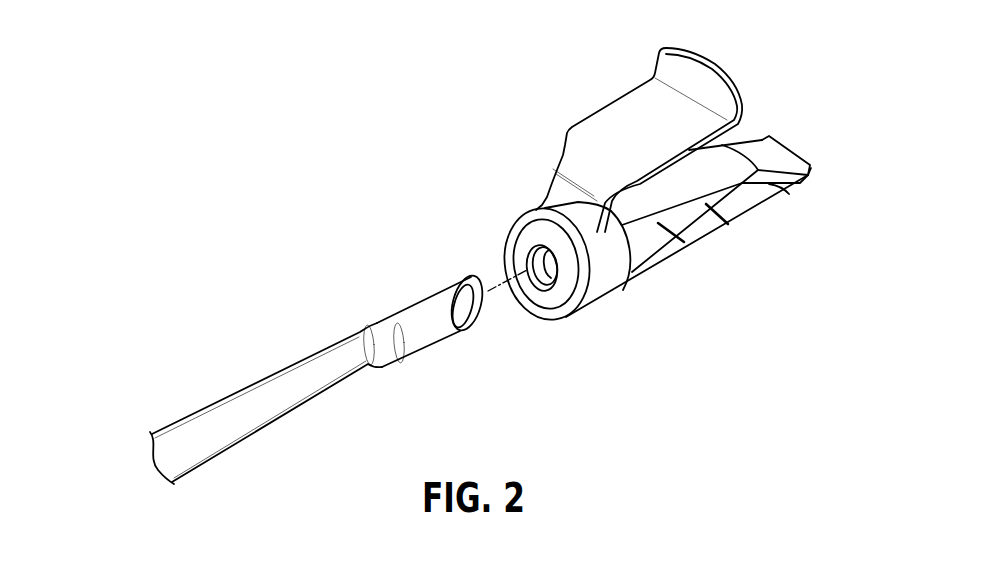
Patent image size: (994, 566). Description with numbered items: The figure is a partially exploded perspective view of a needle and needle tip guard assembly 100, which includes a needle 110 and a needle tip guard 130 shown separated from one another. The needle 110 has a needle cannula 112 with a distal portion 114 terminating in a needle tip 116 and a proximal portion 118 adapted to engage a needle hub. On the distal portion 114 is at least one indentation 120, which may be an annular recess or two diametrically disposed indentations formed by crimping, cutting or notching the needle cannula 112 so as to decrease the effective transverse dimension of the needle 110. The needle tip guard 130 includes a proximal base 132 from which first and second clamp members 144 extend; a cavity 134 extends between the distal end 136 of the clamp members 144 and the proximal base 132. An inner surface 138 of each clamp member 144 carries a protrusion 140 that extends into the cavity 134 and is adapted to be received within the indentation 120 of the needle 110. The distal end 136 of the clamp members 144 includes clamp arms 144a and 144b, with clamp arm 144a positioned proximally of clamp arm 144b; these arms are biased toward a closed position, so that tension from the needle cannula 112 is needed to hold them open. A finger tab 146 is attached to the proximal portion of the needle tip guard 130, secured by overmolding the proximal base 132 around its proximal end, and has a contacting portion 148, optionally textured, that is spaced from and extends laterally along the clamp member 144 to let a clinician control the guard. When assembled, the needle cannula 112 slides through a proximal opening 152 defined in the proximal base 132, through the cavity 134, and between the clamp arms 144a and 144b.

The needle and needle tip guard assembly 100 is at (364, 154).
The needle 110 is at (245, 360).
The needle cannula 112 is at (281, 403).
The distal portion 114 is at (402, 292).
The needle tip 116 is at (486, 309).
The proximal portion 118 is at (151, 422).
The indentation 120 is at (384, 357).
The needle tip guard 130 is at (726, 43).
The proximal base 132 is at (531, 208).
The cavity 134 is at (657, 234).
The distal end 136 is at (743, 227).
The inner surface 138 is at (804, 187).
The protrusion 140 is at (710, 205).
The clamp members 144 is at (724, 160).
The clamp arm 144a is at (767, 158).
The clamp arm 144b is at (778, 201).
The finger tab 146 is at (578, 131).
The contacting portion 148 is at (632, 108).
The proximal opening 152 is at (527, 257).